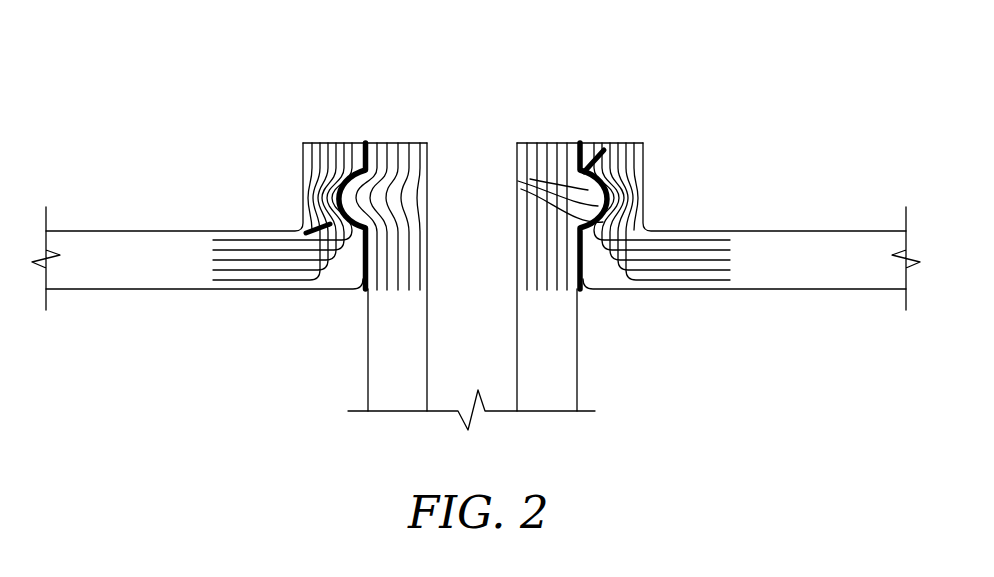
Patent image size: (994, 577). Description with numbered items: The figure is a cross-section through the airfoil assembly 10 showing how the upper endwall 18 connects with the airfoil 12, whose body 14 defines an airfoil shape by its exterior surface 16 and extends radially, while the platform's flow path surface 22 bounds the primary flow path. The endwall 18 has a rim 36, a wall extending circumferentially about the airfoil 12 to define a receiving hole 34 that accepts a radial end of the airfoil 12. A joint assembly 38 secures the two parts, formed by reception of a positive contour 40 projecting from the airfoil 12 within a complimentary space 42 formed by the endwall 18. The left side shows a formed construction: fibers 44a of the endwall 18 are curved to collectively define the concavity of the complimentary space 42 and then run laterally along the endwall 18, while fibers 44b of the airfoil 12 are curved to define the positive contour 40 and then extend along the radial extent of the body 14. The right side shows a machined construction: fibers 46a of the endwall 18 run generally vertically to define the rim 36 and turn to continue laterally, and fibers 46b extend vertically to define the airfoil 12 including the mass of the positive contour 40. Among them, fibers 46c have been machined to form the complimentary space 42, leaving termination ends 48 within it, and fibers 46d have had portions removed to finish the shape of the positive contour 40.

The airfoil assembly 10 is at (795, 112).
The airfoil 12 is at (421, 428).
The body 14 is at (540, 395).
The exterior surface 16 is at (578, 368).
The endwall 18 is at (868, 231).
The flow path surface 22 is at (80, 290).
The receiving hole 34 is at (383, 130).
The rim 36 is at (327, 143).
The joint assembly 38 is at (310, 233).
The positive contour 40 is at (350, 199).
The complimentary space 42 is at (413, 145).
The fibers of the endwall 44a is at (298, 273).
The fibers of the airfoil 44b is at (385, 275).
The fibers of the endwall 46a is at (692, 250).
The fibers of the airfoil 46b is at (540, 290).
The fibers 46c is at (605, 262).
The fibers 46d is at (530, 179).
The termination ends 48 is at (586, 181).